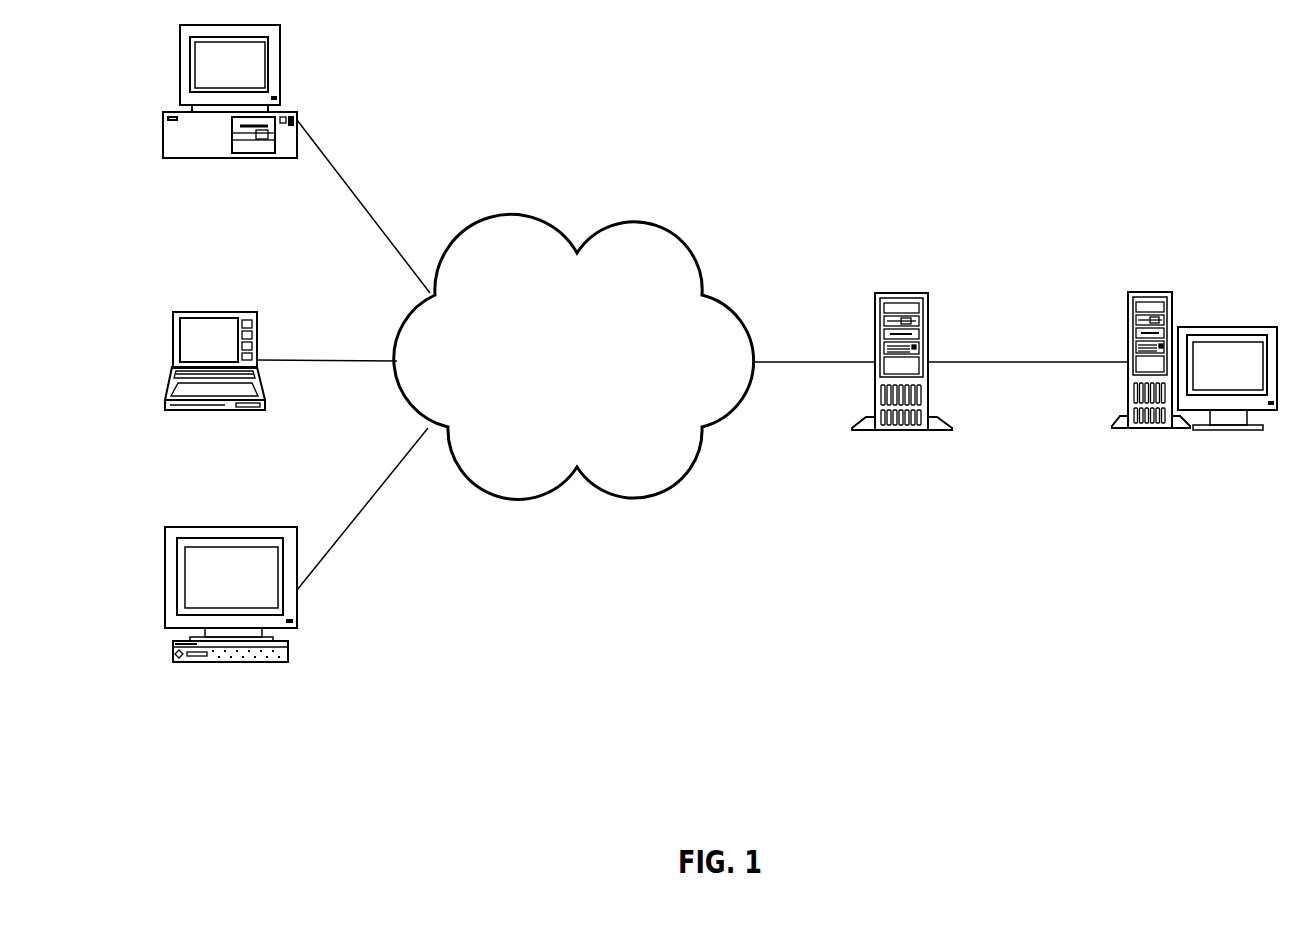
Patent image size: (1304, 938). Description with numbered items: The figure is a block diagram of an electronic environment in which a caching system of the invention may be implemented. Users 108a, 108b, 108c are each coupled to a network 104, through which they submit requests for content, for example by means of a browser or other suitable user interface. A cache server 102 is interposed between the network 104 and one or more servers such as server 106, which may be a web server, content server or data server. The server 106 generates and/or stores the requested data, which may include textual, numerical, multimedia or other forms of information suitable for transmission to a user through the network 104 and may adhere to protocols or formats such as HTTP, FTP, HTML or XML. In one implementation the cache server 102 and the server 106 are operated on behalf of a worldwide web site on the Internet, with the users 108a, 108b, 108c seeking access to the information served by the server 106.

The user 108a is at (296, 159).
The user 108b is at (281, 374).
The user 108c is at (296, 558).
The network 104 is at (574, 356).
The cache server 102 is at (861, 385).
The server 106 is at (1102, 374).